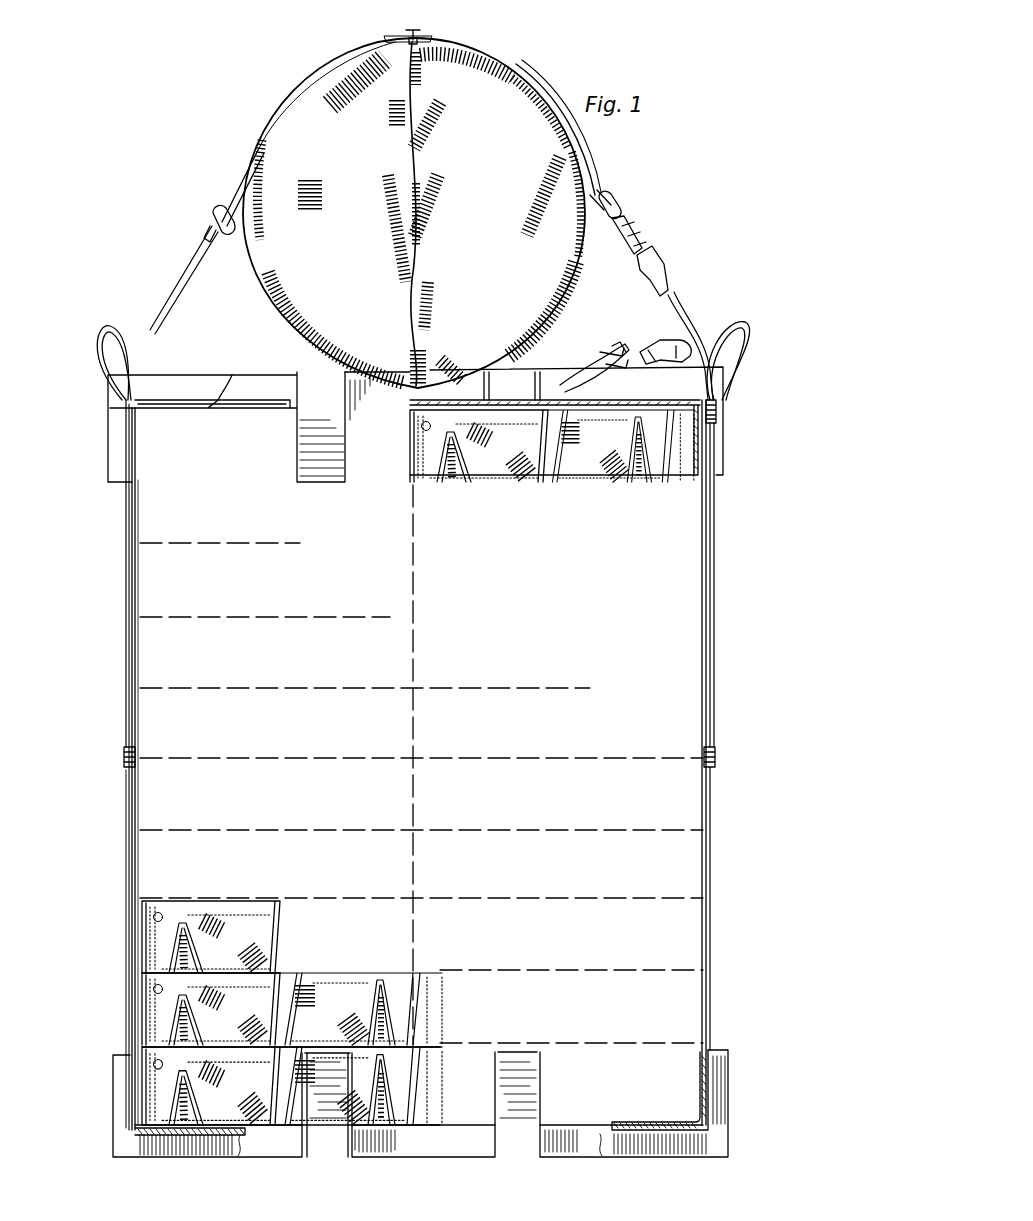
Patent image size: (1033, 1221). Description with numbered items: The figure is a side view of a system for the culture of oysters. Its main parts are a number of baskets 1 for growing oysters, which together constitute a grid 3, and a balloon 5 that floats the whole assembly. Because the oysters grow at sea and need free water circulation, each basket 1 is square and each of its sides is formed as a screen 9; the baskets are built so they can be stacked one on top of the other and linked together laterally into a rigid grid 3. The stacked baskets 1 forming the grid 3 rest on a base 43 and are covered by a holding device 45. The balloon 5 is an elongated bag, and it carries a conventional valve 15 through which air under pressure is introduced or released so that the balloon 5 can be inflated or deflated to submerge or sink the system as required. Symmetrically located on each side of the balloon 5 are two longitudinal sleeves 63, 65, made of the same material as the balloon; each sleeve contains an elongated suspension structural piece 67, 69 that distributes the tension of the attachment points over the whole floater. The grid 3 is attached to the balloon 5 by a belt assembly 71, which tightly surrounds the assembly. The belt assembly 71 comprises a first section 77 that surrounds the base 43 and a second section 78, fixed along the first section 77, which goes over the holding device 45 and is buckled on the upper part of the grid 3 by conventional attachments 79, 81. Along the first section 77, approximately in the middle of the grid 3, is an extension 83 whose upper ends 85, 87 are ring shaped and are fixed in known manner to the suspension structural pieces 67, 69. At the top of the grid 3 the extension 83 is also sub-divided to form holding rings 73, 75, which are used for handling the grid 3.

The basket 1 is at (268, 1000).
The grid 3 is at (126, 824).
The balloon 5 is at (520, 92).
The screen 9 is at (208, 918).
The valve 15 is at (420, 30).
The base 43 is at (706, 1169).
The holding device 45 is at (250, 362).
The longitudinal sleeve 63 is at (252, 170).
The longitudinal sleeve 65 is at (590, 178).
The suspension structural piece 67 is at (222, 210).
The suspension structural piece 69 is at (607, 200).
The belt assembly 71 is at (118, 540).
The holding ring 73 is at (112, 338).
The holding ring 75 is at (743, 325).
The first section 77 is at (131, 885).
The second section 78 is at (140, 620).
The attachment 79 is at (606, 356).
The attachment 81 is at (650, 348).
The extension 83 is at (712, 580).
The upper end 85 is at (222, 226).
The upper end 87 is at (614, 224).